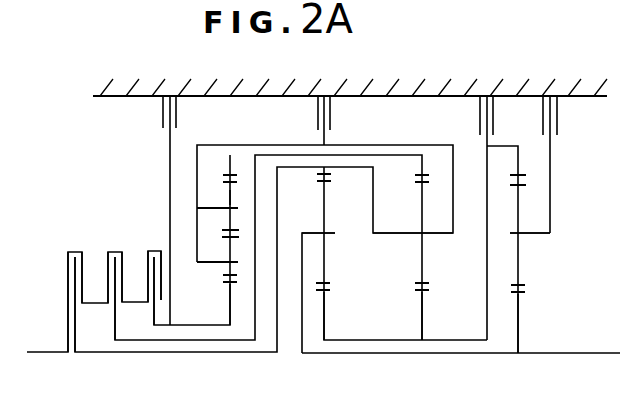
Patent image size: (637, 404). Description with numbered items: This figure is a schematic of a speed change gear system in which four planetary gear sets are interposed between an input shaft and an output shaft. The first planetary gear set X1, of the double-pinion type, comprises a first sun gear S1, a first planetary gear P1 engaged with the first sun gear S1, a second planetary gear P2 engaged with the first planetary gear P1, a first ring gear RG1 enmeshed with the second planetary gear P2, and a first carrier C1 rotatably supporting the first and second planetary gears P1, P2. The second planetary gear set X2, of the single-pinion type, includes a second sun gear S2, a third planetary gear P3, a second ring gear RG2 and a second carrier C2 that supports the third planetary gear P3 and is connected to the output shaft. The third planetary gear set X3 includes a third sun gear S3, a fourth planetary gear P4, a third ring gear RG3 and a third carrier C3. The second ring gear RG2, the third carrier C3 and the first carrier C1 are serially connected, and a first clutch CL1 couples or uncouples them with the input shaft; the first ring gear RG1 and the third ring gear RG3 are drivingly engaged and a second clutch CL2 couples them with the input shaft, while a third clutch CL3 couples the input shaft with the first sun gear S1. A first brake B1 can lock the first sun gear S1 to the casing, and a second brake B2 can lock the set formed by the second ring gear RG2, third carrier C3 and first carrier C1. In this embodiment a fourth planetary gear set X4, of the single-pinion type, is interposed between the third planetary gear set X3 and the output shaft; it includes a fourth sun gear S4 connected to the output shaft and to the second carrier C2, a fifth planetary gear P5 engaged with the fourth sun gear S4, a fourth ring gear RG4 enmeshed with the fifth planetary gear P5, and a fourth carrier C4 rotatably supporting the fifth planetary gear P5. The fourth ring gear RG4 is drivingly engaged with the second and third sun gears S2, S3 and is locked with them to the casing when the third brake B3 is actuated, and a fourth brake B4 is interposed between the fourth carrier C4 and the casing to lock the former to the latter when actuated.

The first brake B1 is at (184, 210).
The second brake B2 is at (342, 120).
The third brake B3 is at (503, 218).
The fourth brake B4 is at (566, 164).
The first ring gear RG1 is at (231, 172).
The second ring gear RG2 is at (326, 172).
The third ring gear RG3 is at (420, 173).
The fourth ring gear RG4 is at (520, 164).
The first planetary gear P1 is at (229, 273).
The second planetary gear P2 is at (232, 190).
The third planetary gear P3 is at (324, 238).
The fourth planetary gear P4 is at (422, 265).
The fifth planetary gear P5 is at (519, 271).
The first carrier C1 is at (210, 210).
The second carrier C2 is at (321, 230).
The third carrier C3 is at (413, 252).
The fourth carrier C4 is at (522, 237).
The first clutch CL1 is at (54, 288).
The second clutch CL2 is at (98, 282).
The third clutch CL3 is at (140, 274).
The first planetary gear set X1 is at (226, 298).
The second planetary gear set X2 is at (320, 300).
The third planetary gear set X3 is at (418, 300).
The fourth planetary gear set X4 is at (514, 306).
The first sun gear S1 is at (229, 303).
The second sun gear S2 is at (323, 305).
The third sun gear S3 is at (422, 305).
The fourth sun gear S4 is at (519, 308).